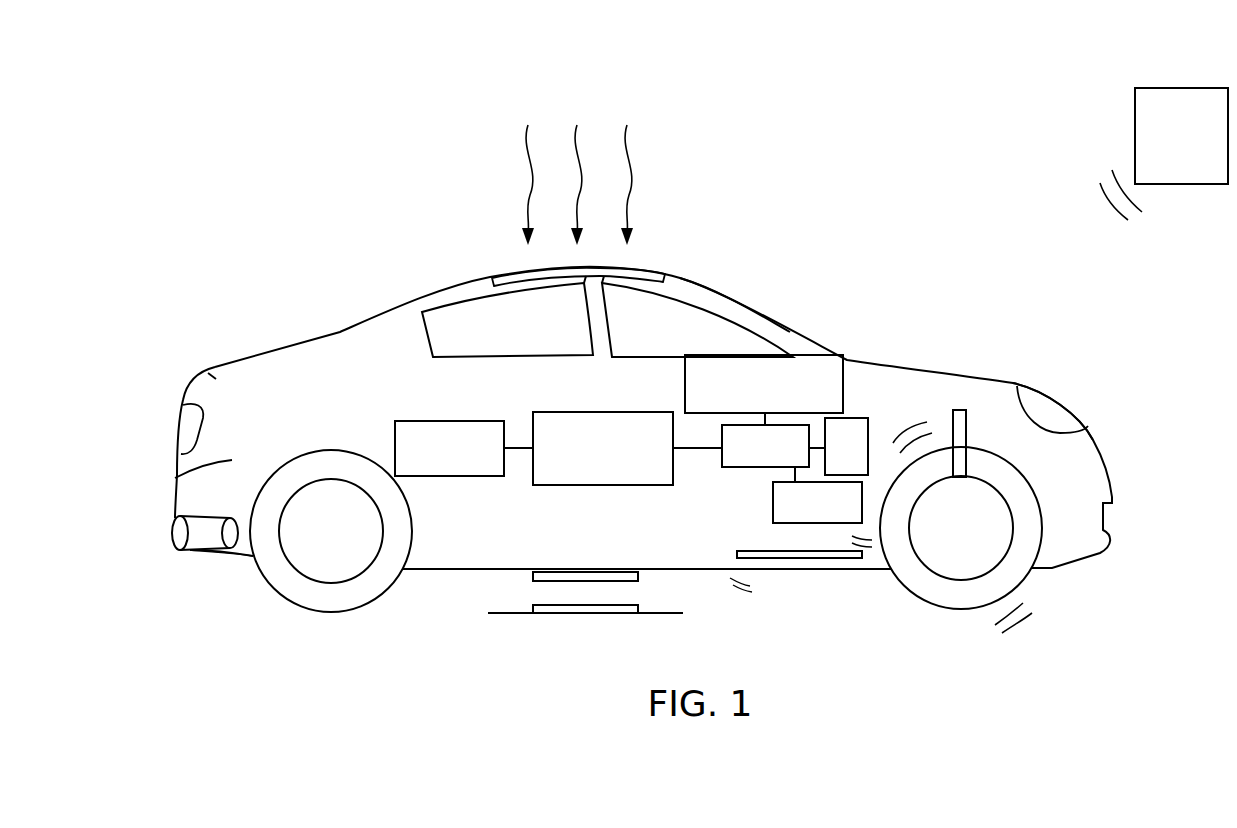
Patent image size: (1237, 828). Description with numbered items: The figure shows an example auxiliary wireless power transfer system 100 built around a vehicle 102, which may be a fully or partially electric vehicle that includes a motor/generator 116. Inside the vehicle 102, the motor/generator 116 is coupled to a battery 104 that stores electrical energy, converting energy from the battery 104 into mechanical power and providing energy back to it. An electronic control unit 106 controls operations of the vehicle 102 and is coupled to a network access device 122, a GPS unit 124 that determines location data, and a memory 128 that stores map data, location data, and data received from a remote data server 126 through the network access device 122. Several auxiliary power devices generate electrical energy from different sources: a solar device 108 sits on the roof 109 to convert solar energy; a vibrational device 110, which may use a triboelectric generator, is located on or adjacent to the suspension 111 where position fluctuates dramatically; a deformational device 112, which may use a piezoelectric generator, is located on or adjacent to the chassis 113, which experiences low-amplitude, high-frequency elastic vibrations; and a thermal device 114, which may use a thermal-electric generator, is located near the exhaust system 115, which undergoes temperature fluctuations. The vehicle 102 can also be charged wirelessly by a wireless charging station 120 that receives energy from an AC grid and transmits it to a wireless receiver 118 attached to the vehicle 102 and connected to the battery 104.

The auxiliary wireless power transfer system 100 is at (228, 214).
The vehicle 102 is at (340, 330).
The battery 104 is at (601, 486).
The electronic control unit 106 is at (748, 468).
The solar device 108 is at (653, 270).
The roof 109 is at (710, 258).
The vibrational device 110 is at (962, 410).
The suspension 111 is at (1000, 405).
The deformational device 112 is at (848, 560).
The chassis 113 is at (786, 580).
The thermal device 114 is at (207, 550).
The exhaust system 115 is at (242, 572).
The motor/generator 116 is at (463, 477).
The wireless receiver 118 is at (532, 576).
The wireless charging station 120 is at (558, 610).
The network access device 122 is at (817, 355).
The GPS unit 124 is at (855, 418).
The remote data server 126 is at (1184, 88).
The memory 128 is at (773, 508).